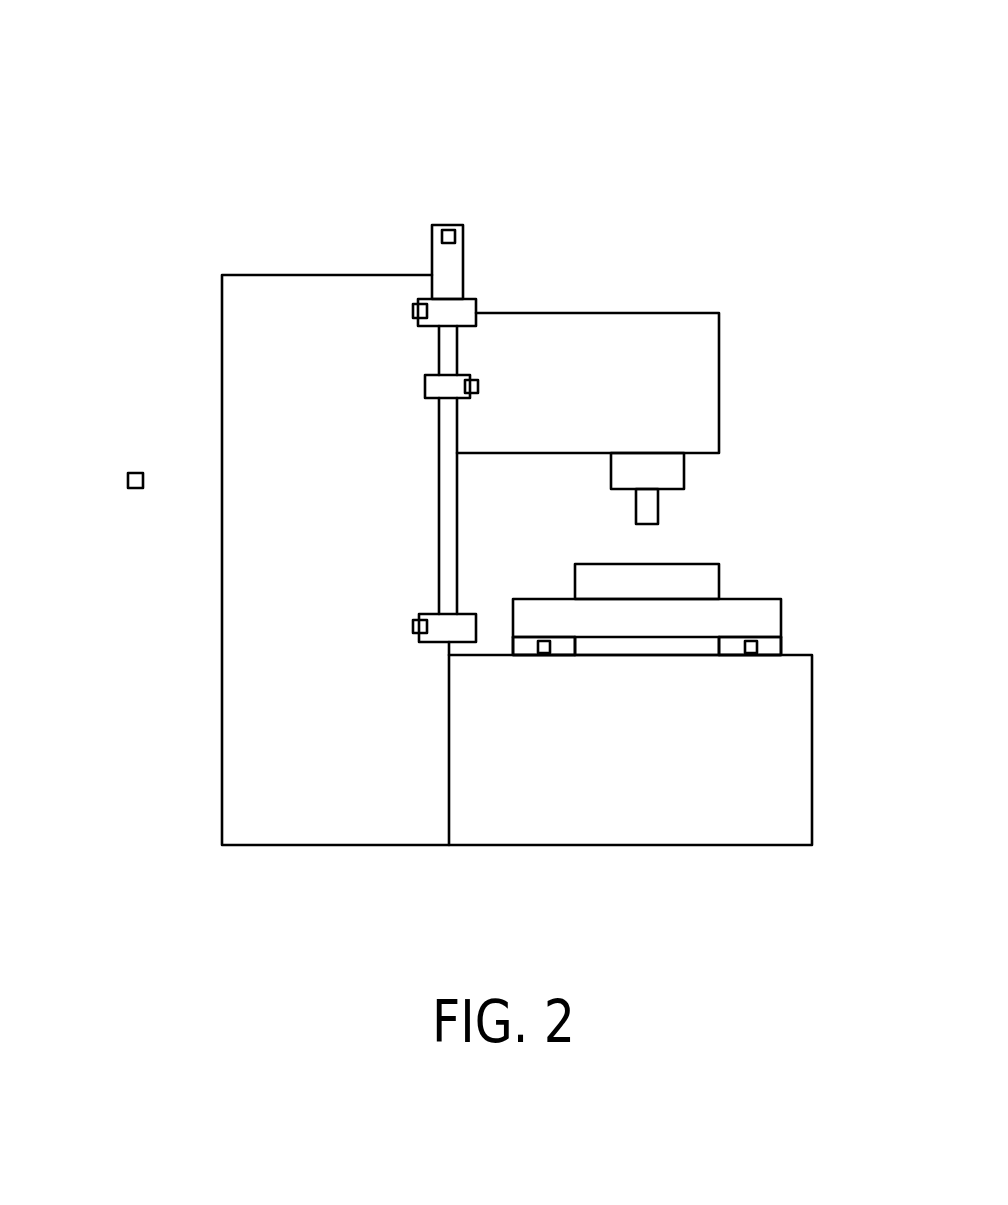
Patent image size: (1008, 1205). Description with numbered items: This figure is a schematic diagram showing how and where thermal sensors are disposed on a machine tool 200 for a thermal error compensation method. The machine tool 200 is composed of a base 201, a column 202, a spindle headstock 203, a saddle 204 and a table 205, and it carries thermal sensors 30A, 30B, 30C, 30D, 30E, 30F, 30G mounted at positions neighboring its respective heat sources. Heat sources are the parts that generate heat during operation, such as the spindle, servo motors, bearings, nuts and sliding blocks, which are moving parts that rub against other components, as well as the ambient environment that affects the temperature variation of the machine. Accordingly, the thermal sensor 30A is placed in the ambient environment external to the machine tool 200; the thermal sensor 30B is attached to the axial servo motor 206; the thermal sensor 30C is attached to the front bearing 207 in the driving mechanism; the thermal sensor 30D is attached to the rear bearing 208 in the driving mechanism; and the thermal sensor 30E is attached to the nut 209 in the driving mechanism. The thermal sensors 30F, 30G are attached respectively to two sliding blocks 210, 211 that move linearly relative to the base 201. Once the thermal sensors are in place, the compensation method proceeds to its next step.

The machine tool 200 is at (518, 50).
The base 201 is at (793, 782).
The column 202 is at (233, 780).
The spindle headstock 203 is at (710, 373).
The saddle 204 is at (778, 616).
The table 205 is at (700, 567).
The axial servo motor 206 is at (437, 252).
The front bearing 207 is at (470, 299).
The rear bearing 208 is at (425, 615).
The nut 209 is at (423, 392).
The sliding block 210 is at (523, 655).
The sliding block 211 is at (768, 655).
The thermal sensor 30A is at (136, 473).
The thermal sensor 30B is at (449, 225).
The thermal sensor 30C is at (413, 311).
The thermal sensor 30D is at (413, 627).
The thermal sensor 30E is at (478, 387).
The thermal sensor 30F is at (543, 640).
The thermal sensor 30G is at (749, 640).